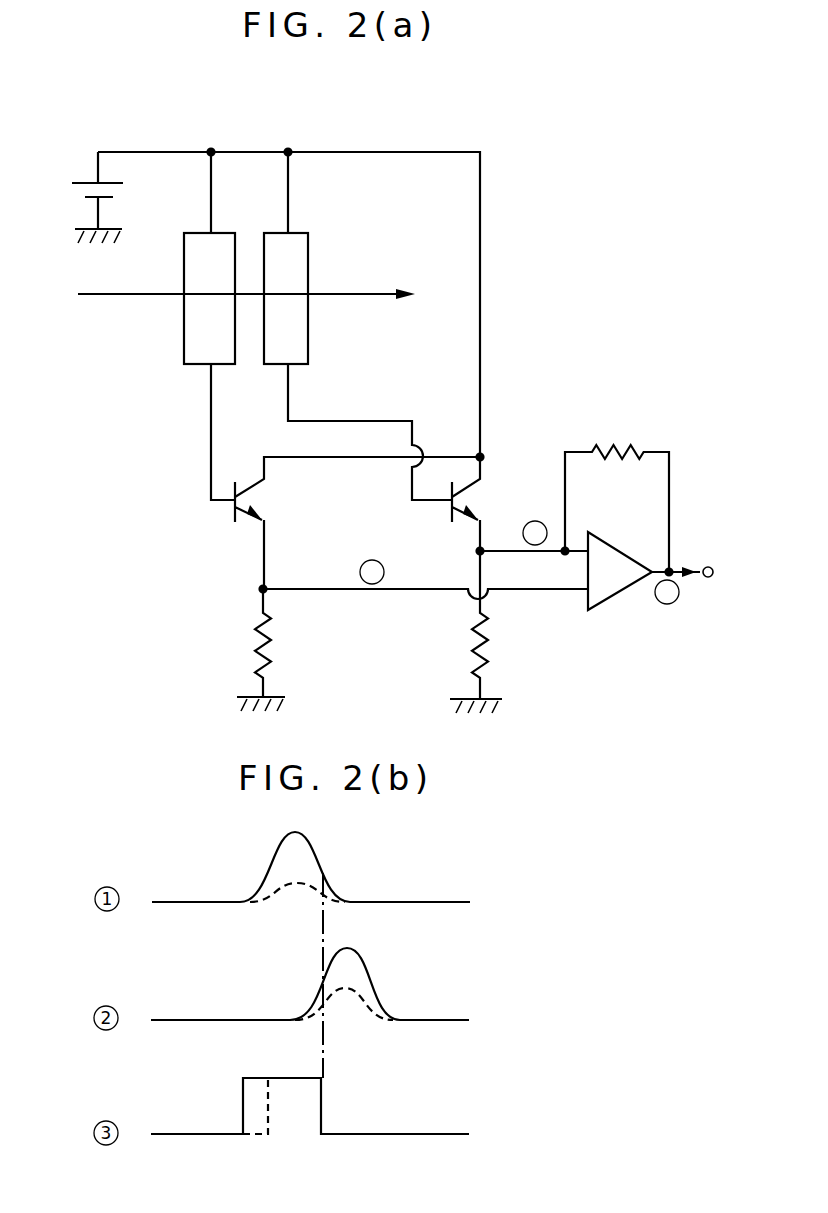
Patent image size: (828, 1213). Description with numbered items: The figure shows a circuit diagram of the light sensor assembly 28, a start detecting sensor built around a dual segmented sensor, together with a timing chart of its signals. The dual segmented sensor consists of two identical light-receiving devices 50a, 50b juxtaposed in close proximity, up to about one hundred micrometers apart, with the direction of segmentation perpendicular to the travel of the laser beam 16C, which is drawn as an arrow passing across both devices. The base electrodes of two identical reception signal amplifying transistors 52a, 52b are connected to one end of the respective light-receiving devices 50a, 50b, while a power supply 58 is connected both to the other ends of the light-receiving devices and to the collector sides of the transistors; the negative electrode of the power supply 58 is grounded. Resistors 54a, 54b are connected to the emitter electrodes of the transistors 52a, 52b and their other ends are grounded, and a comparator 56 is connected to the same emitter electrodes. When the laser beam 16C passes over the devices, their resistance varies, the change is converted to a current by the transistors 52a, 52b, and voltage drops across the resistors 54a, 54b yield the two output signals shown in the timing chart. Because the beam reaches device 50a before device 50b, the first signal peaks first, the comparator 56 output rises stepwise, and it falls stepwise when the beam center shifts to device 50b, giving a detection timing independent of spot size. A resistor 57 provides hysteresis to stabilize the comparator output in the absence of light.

The light sensor assembly 28 is at (536, 228).
The power supply 58 is at (82, 183).
The light-receiving device 50a is at (190, 276).
The light-receiving device 50b is at (303, 257).
The laser beam 16C is at (117, 297).
The reception signal amplifying transistor 52a is at (247, 513).
The reception signal amplifying transistor 52b is at (477, 497).
The resistor 54a is at (258, 650).
The resistor 54b is at (485, 656).
The comparator 56 is at (620, 548).
The resistor 57 is at (633, 449).